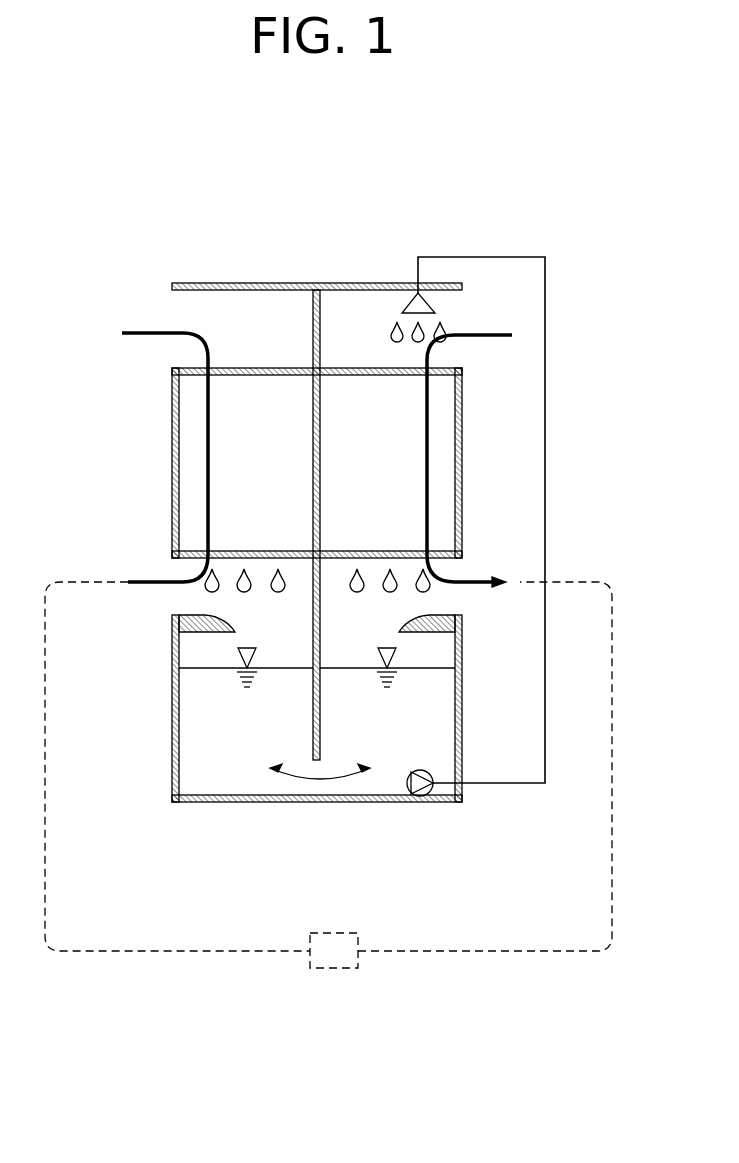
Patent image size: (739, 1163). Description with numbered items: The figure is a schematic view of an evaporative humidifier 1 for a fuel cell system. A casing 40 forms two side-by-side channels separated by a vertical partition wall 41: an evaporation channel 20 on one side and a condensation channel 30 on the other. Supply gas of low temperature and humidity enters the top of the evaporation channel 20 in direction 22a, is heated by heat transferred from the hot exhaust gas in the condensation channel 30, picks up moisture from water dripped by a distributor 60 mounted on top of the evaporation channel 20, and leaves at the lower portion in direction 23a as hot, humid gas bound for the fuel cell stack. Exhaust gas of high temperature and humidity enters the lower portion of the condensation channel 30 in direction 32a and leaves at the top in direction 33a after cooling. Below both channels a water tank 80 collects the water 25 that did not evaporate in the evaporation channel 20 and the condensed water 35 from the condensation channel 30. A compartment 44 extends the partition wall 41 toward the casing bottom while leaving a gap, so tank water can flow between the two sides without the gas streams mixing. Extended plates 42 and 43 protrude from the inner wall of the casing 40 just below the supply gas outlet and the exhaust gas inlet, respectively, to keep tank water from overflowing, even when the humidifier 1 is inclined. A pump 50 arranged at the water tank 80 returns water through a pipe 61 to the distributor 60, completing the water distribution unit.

The evaporative humidifier 1 is at (147, 204).
The evaporation channel 20 is at (379, 465).
The supply gas inlet direction 22a is at (484, 333).
The supply gas outlet direction 23a is at (430, 497).
The water 25 is at (420, 587).
The condensation channel 30 is at (249, 462).
The exhaust gas inlet direction 32a is at (152, 581).
The exhaust gas outlet direction 33a is at (142, 334).
The condensed water 35 is at (207, 586).
The casing 40 is at (463, 404).
The partition wall 41 is at (311, 400).
The extended plate 42 is at (430, 630).
The extended plate 43 is at (203, 632).
The compartment 44 is at (323, 705).
The pump 50 is at (420, 805).
The distributor 60 is at (407, 311).
The pipe 61 is at (546, 367).
The water tank 80 is at (168, 698).